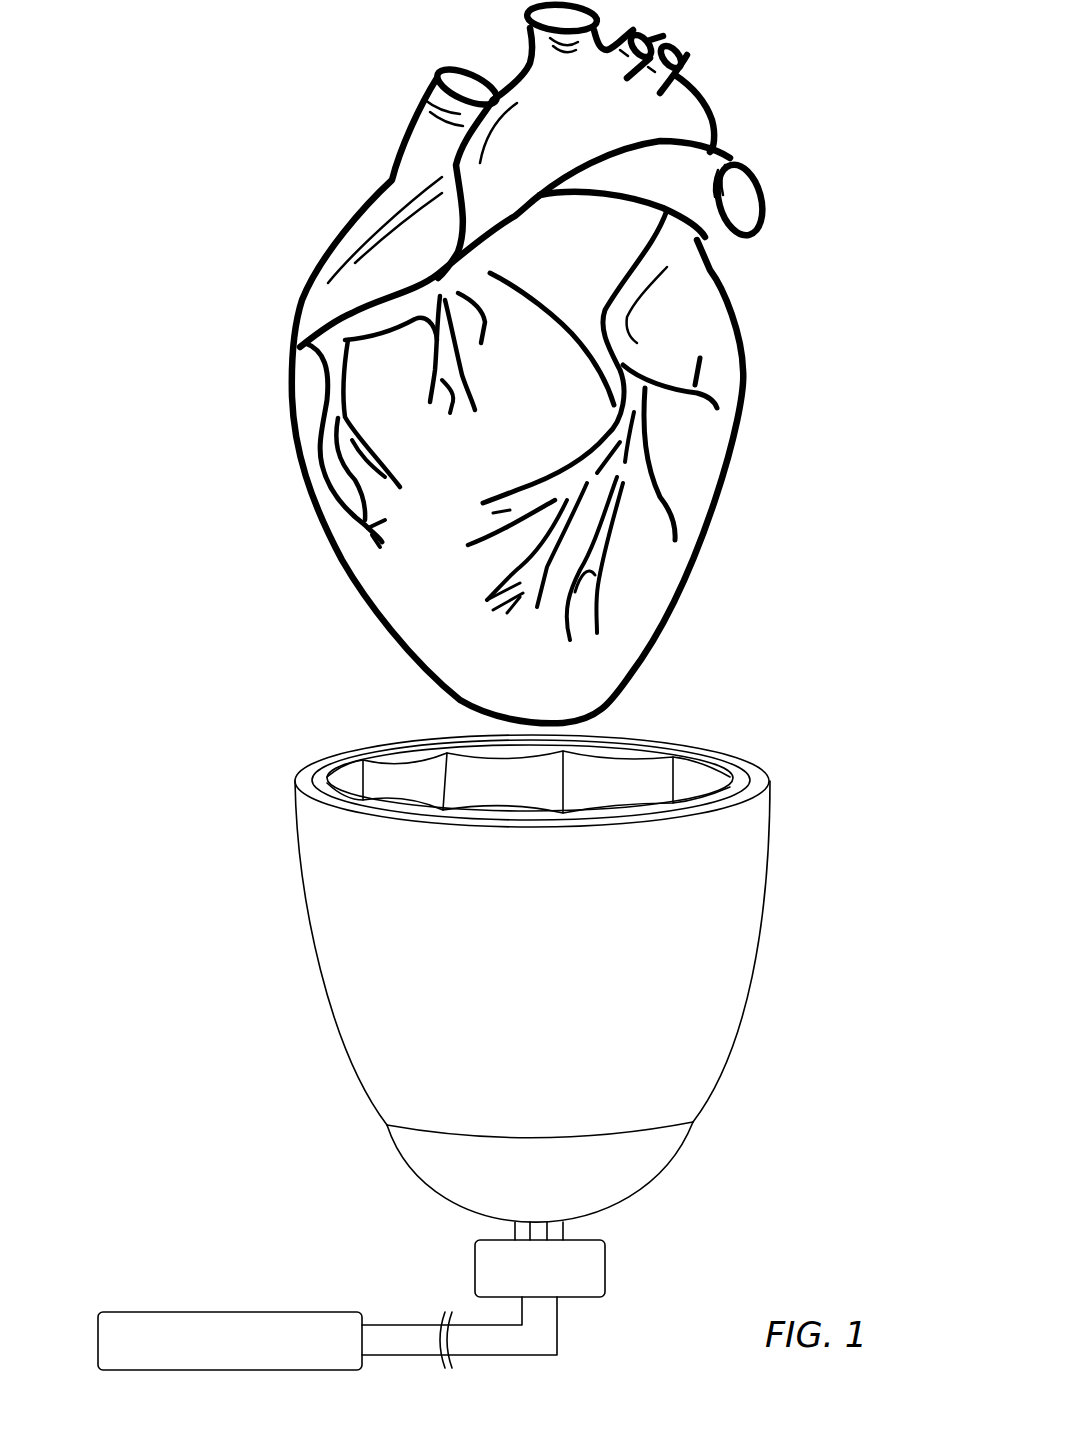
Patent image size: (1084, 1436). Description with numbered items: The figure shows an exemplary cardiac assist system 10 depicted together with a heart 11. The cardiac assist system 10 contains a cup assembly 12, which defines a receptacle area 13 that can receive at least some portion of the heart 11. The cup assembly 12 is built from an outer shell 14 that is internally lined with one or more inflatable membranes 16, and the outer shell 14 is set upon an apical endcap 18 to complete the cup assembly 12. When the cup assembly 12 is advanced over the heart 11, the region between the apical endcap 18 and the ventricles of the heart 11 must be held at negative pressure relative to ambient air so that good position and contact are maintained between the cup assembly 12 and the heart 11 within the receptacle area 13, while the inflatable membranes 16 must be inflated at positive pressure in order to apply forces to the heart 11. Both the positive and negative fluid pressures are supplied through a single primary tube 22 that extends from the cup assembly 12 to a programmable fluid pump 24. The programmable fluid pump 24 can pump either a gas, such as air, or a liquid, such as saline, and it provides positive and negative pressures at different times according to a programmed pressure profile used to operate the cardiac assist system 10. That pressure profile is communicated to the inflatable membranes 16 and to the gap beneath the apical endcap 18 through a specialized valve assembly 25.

The cardiac assist system 10 is at (503, 1005).
The heart 11 is at (710, 333).
The cup assembly 12 is at (519, 951).
The receptacle area 13 is at (428, 785).
The outer shell 14 is at (330, 859).
The inflatable membranes 16 is at (697, 780).
The apical endcap 18 is at (462, 1168).
The primary tube 22 is at (393, 1323).
The programmable fluid pump 24 is at (244, 1311).
The valve assembly 25 is at (607, 1268).